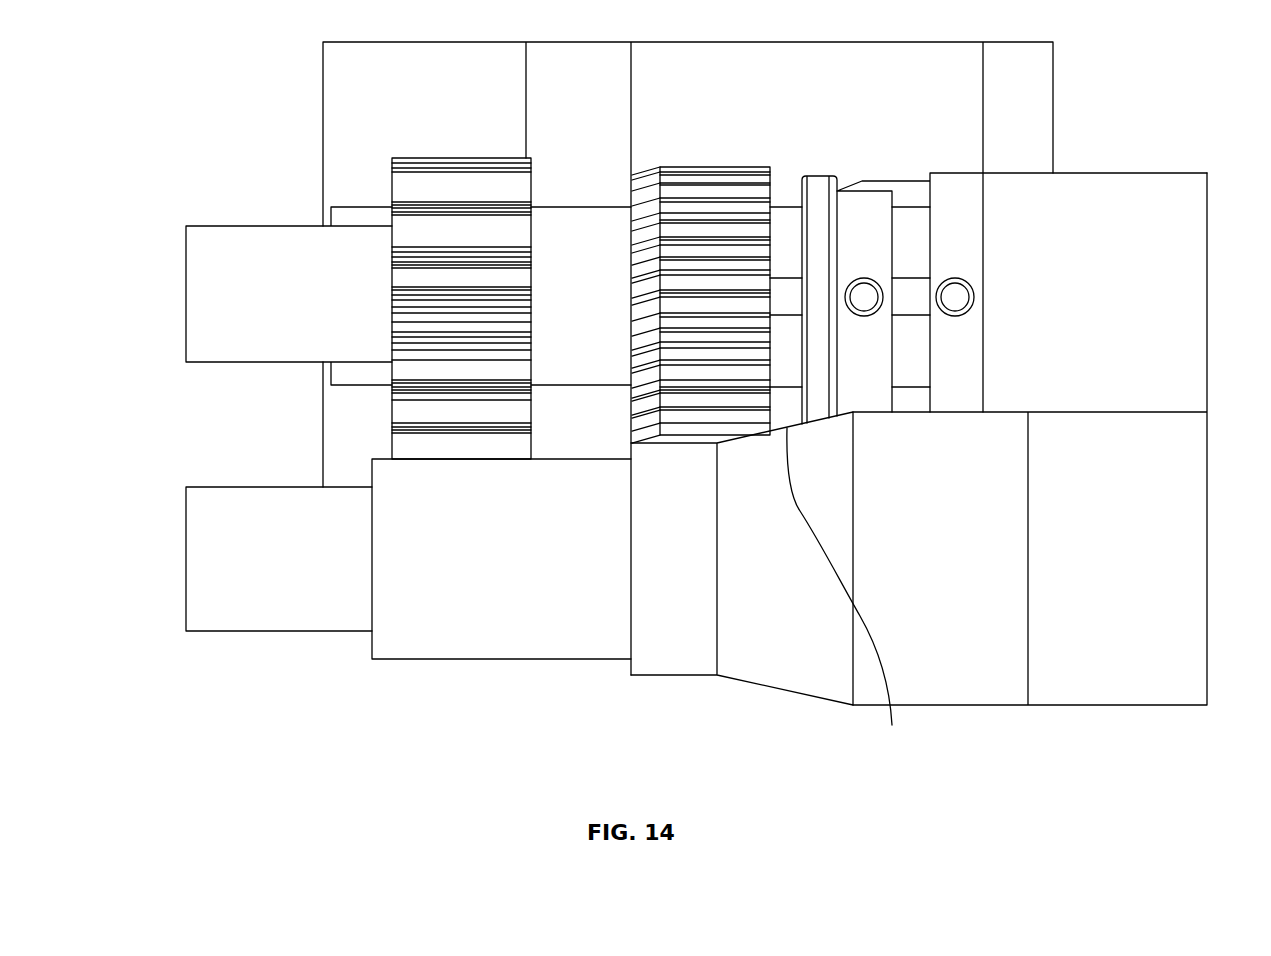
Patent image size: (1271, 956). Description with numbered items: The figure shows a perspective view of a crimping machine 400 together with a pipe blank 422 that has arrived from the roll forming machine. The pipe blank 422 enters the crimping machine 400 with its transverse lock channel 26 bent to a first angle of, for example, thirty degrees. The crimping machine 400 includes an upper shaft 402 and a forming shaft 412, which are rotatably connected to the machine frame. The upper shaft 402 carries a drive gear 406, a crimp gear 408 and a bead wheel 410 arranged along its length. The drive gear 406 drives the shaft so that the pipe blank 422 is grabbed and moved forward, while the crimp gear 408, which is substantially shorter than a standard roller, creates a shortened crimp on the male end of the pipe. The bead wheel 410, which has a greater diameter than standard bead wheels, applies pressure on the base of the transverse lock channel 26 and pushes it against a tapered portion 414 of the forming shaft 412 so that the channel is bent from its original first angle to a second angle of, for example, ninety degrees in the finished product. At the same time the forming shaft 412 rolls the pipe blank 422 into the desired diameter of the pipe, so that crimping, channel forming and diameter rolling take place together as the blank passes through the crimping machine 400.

The crimping machine 400 is at (1139, 109).
The upper shaft 402 is at (250, 225).
The drive gear 406 is at (457, 157).
The crimp gear 408 is at (705, 166).
The bead wheel 410 is at (820, 175).
The forming shaft 412 is at (250, 486).
The tapered portion 414 is at (780, 693).
The pipe blank 422 is at (1133, 412).
The transverse lock channel 26 is at (847, 594).